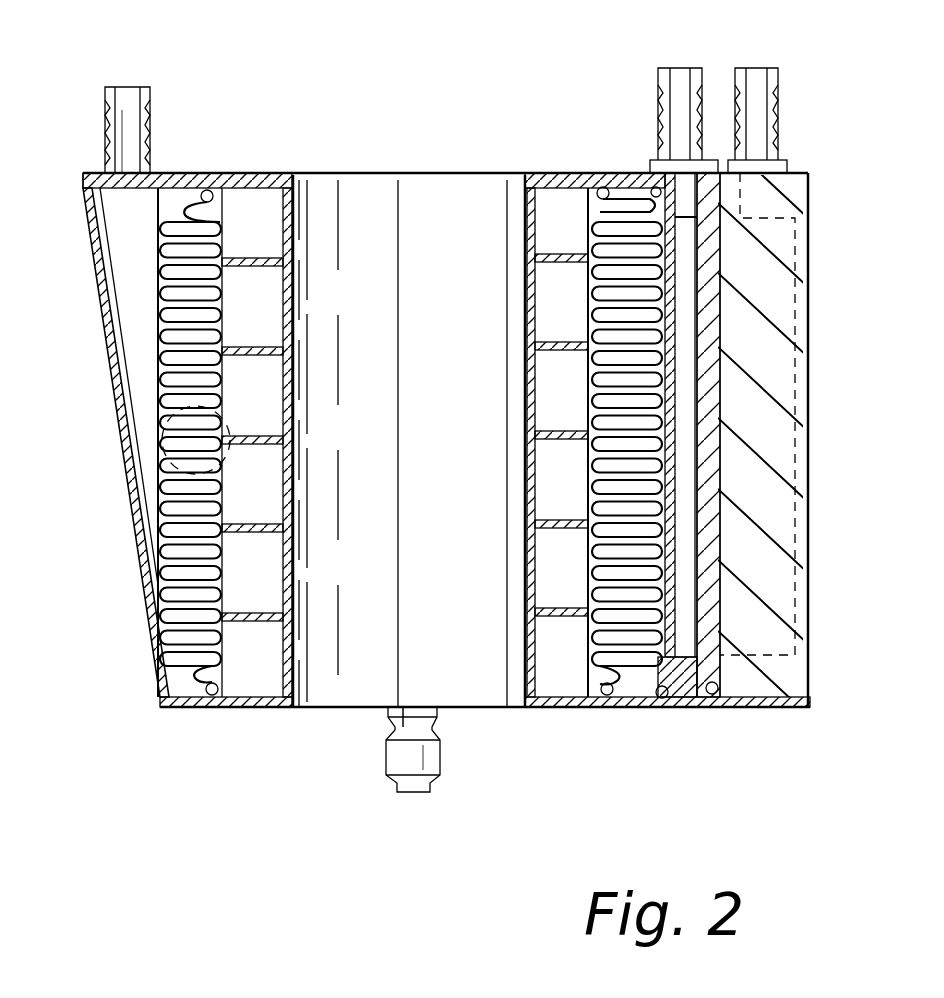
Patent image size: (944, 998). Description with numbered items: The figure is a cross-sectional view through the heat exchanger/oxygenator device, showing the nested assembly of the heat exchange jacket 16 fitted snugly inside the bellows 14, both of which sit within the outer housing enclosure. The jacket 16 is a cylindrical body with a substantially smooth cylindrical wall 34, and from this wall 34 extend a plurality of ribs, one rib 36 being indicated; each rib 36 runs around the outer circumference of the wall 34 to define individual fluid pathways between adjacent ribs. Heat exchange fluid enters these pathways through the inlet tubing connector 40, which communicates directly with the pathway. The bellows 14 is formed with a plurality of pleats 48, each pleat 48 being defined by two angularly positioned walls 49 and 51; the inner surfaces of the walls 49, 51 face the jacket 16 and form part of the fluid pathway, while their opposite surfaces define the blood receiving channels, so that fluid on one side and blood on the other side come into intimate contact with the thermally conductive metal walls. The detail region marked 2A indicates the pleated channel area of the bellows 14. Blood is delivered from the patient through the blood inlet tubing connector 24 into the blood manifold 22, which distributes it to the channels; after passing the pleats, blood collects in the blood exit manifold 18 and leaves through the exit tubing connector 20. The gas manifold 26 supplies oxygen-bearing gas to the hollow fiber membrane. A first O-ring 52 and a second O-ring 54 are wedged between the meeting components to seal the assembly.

The bellows 14 is at (117, 366).
The heat exchange jacket 16 is at (271, 169).
The blood exit manifold 18 is at (100, 284).
The exit tubing connector 20 is at (107, 99).
The blood manifold 22 is at (712, 690).
The blood inlet tubing connector 24 is at (661, 82).
The gas manifold 26 is at (810, 196).
The detail area 2A is at (142, 432).
The cylindrical wall 34 is at (294, 204).
The rib 36 is at (272, 640).
The inlet tubing connector 40 is at (392, 748).
The pleat 48 is at (162, 556).
The pleat wall 49 is at (176, 654).
The pleat wall 51 is at (168, 679).
The first O-ring 52 is at (209, 188).
The second O-ring 54 is at (208, 700).